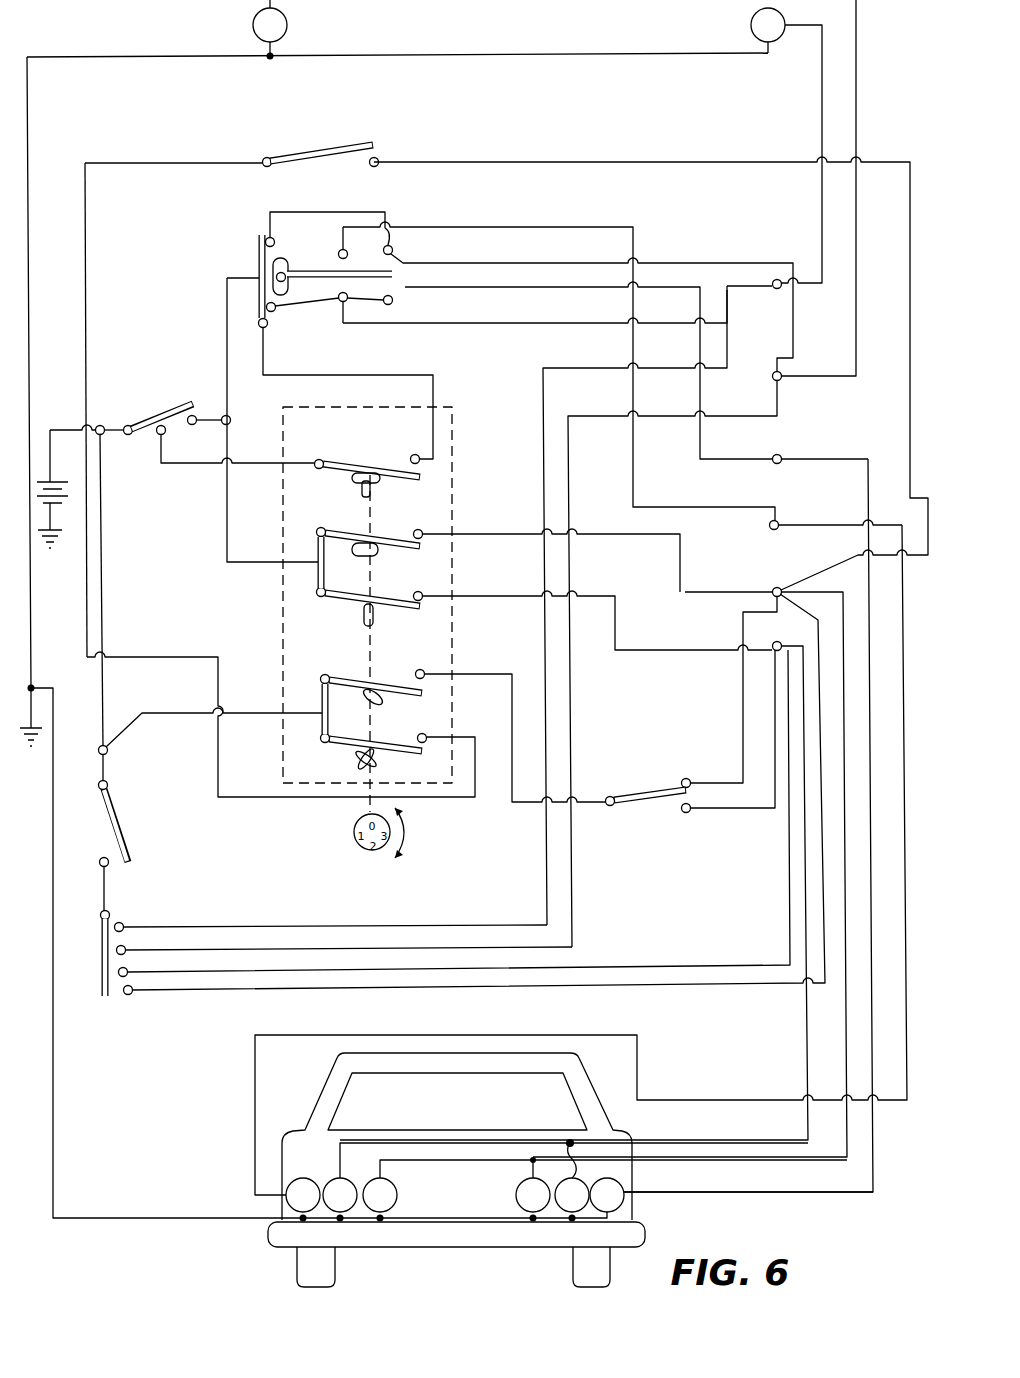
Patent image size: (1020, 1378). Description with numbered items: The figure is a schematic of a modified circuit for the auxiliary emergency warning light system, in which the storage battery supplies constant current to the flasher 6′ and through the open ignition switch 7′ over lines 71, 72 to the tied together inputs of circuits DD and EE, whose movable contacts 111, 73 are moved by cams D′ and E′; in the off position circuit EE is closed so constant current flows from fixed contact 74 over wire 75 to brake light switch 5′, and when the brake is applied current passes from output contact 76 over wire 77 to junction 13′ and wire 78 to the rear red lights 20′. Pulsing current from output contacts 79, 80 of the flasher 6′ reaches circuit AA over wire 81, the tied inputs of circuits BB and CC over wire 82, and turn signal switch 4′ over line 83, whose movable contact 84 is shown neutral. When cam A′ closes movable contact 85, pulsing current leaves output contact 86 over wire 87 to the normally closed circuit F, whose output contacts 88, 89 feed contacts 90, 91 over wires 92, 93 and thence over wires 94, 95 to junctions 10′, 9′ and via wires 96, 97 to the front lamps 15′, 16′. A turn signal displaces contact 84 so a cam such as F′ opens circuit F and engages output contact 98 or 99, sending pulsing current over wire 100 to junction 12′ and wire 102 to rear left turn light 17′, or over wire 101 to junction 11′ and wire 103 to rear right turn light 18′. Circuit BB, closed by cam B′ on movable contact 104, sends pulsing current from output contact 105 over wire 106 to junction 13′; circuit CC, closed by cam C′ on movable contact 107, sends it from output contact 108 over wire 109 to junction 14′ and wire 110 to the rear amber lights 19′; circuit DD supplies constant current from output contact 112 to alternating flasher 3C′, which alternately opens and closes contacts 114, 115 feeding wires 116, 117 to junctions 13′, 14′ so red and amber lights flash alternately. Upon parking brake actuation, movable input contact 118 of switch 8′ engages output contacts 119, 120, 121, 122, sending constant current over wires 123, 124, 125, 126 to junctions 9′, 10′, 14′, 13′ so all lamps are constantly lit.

The left front light 15′ is at (397, 30).
The right front light 16′ is at (768, 30).
The wire 96 is at (858, 84).
The wire 97 is at (820, 101).
The wire 77 is at (913, 362).
The brake light switch 5′ is at (267, 156).
The output contact 76 is at (379, 158).
The turn signal switch 4′ is at (258, 266).
The normally closed circuit F is at (262, 228).
The cam F′ is at (289, 264).
The output contact 88 is at (274, 240).
The wire 92 is at (325, 212).
The output contact 98 is at (345, 252).
The output contact 90 is at (392, 248).
The wire 100 is at (548, 228).
The wire 94 is at (508, 263).
The movable contact 84 is at (318, 270).
The line 83 is at (226, 318).
The wire 93 is at (333, 294).
The output contact 91 is at (341, 303).
The output contact 99 is at (393, 301).
The wire 101 is at (555, 287).
The wire 95 is at (490, 324).
The output contact 89 is at (268, 326).
The wire 87 is at (345, 375).
The output contact 86 is at (416, 454).
The junction 9′ is at (777, 279).
The junction 10′ is at (782, 380).
The junction 11′ is at (782, 459).
The wire 103 is at (870, 472).
The junction 12′ is at (778, 521).
The wire 102 is at (906, 645).
The wire 110 is at (806, 1030).
The junction 13′ is at (781, 590).
The wire 78 is at (843, 590).
The wire 126 is at (575, 984).
The output contact 122 is at (134, 994).
The junction 14′ is at (777, 641).
The wire 117 is at (734, 810).
The contact 114 is at (688, 814).
The wire 125 is at (680, 965).
The output contact 121 is at (128, 970).
The contact 115 is at (689, 779).
The wire 116 is at (742, 712).
The alternating flasher 3C′ is at (615, 815).
The output contact 112 is at (423, 669).
The wire 109 is at (616, 614).
The output contact 108 is at (424, 594).
The wire 106 is at (666, 534).
The output contact 105 is at (424, 531).
The wire 124 is at (575, 890).
The output contact 120 is at (126, 948).
The wire 123 is at (330, 925).
The output contact 119 is at (124, 925).
The flasher 6′ is at (131, 425).
The output contact 79 is at (158, 435).
The output contact 80 is at (192, 425).
The wire 81 is at (199, 464).
The line 71 is at (103, 526).
The wire 75 is at (180, 657).
The fixed contact 74 is at (430, 736).
The line 72 is at (172, 713).
The ignition switch 7′ is at (108, 786).
The switch 8′ is at (109, 912).
The movable input contact 118 is at (100, 962).
The wire 82 is at (227, 515).
The movable contact 85 is at (355, 468).
The circuit AA is at (311, 474).
The cam A′ is at (366, 481).
The movable contact 104 is at (370, 545).
The circuit BB is at (312, 536).
The cam B′ is at (373, 557).
The movable contact 107 is at (372, 604).
The circuit CC is at (312, 598).
The cam C′ is at (379, 618).
The movable contact 111 is at (378, 682).
The circuit DD is at (316, 683).
The cam D′ is at (382, 705).
The movable contact 73 is at (378, 748).
The circuit EE is at (316, 742).
The cam E′ is at (374, 764).
The rear left turn indicating light 17′ is at (303, 1200).
The rear right turn indicating light 18′ is at (731, 1195).
The rear amber warning lights 19′ is at (565, 1180).
The rear red warning lights 20′ is at (605, 1189).